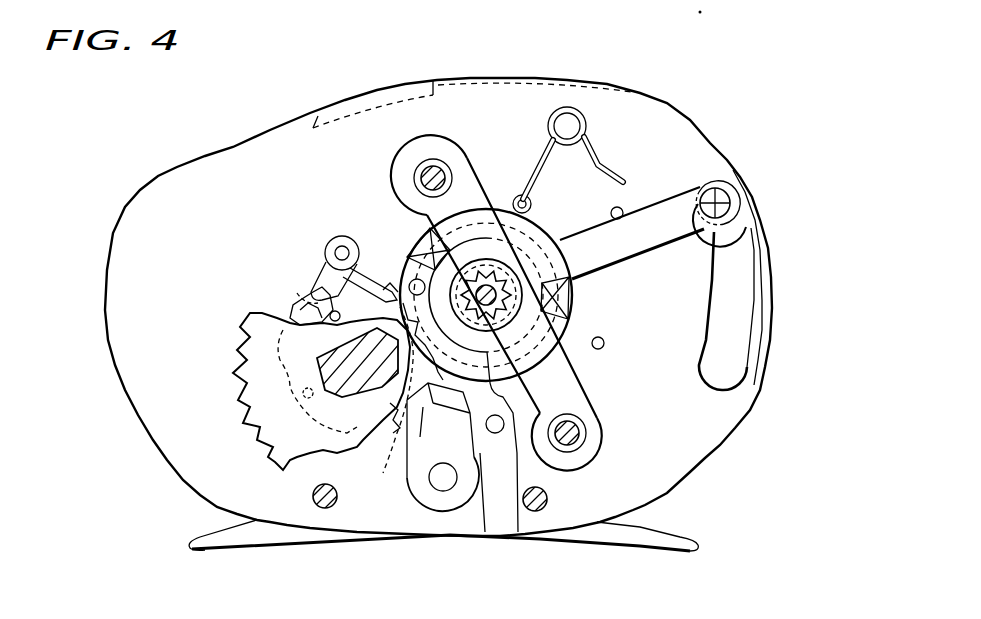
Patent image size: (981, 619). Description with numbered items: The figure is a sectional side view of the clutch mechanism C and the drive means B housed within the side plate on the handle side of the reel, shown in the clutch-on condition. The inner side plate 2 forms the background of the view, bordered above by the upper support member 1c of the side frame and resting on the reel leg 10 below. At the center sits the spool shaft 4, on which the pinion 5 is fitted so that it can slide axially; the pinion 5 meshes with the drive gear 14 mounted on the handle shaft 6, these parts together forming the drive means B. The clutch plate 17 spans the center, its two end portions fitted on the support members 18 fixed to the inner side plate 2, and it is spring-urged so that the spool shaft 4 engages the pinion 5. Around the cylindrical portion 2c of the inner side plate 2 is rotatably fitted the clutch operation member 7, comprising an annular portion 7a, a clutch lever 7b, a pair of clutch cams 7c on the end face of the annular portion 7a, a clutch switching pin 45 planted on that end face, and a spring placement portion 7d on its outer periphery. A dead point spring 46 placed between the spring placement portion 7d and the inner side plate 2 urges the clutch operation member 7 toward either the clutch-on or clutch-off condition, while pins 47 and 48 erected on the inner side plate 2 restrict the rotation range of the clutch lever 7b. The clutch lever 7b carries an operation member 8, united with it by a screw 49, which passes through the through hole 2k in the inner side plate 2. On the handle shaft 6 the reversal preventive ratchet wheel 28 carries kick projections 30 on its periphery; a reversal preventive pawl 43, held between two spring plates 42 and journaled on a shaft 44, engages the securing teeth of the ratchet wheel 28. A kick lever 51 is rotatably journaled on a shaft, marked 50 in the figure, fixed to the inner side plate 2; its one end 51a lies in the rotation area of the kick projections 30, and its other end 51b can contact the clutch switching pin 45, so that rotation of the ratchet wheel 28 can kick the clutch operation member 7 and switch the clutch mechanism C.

The inner side plate 2 is at (160, 178).
The reel leg 10 is at (195, 540).
The upper support member 1c is at (318, 118).
The clutch mechanism C is at (491, 91).
The spool shaft 4 is at (505, 320).
The pinion 5 is at (512, 306).
The clutch plate 17 is at (460, 148).
The support members 18 is at (418, 168).
The clutch operation member 7 is at (597, 207).
The annular portion 7a is at (512, 195).
The clutch lever 7b is at (675, 207).
The clutch cams 7c is at (425, 252).
The spring placement portion 7d is at (521, 193).
The dead point spring 46 is at (587, 118).
The pin 47 is at (621, 209).
The pin 48 is at (599, 349).
The screw 49 is at (738, 205).
The operation member 8 is at (752, 215).
The through hole 2k is at (745, 265).
The pawl pivot 50 is at (345, 236).
The kick lever 51 is at (334, 240).
The one end of kick lever 51a is at (332, 300).
The other end of kick lever 51b is at (387, 283).
The kick projections 30 is at (297, 293).
The reversal preventive ratchet wheel 28 is at (300, 310).
The drive means B is at (194, 321).
The drive gear 14 is at (237, 367).
The handle shaft 6 is at (315, 378).
The clutch switching pin 45 is at (390, 458).
The cylindrical portion 2c is at (507, 442).
The spring plates 42 is at (485, 532).
The reversal preventive pawl 43 is at (420, 513).
The shaft 44 is at (443, 492).